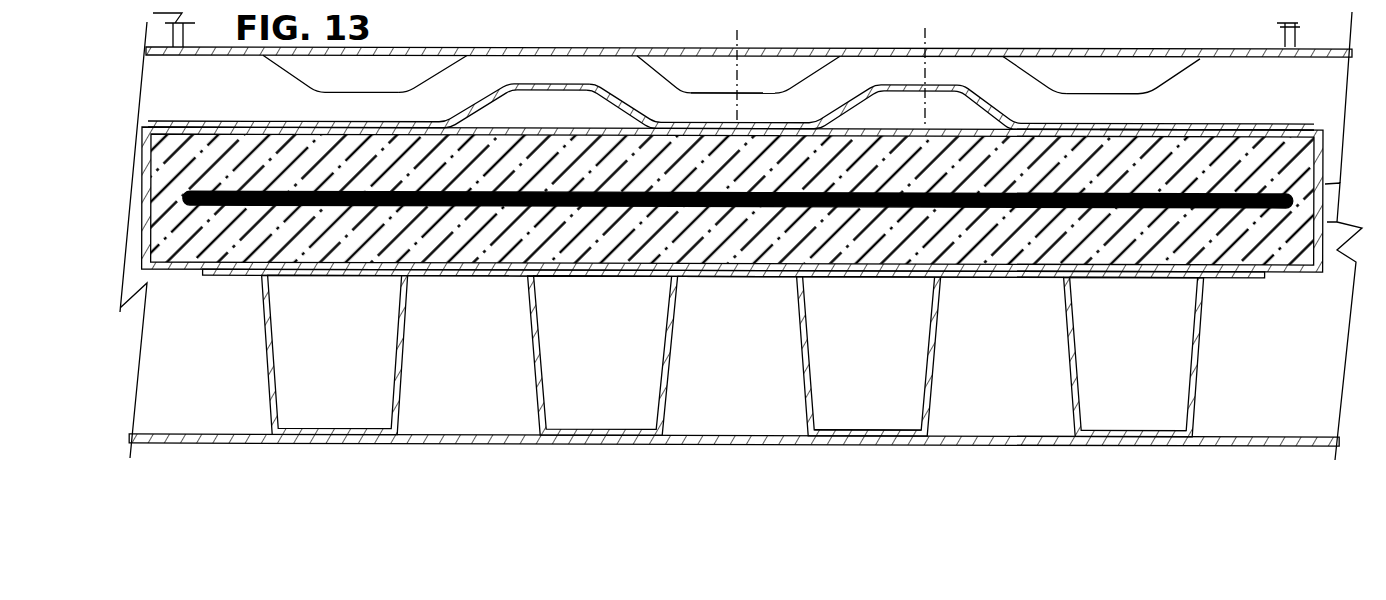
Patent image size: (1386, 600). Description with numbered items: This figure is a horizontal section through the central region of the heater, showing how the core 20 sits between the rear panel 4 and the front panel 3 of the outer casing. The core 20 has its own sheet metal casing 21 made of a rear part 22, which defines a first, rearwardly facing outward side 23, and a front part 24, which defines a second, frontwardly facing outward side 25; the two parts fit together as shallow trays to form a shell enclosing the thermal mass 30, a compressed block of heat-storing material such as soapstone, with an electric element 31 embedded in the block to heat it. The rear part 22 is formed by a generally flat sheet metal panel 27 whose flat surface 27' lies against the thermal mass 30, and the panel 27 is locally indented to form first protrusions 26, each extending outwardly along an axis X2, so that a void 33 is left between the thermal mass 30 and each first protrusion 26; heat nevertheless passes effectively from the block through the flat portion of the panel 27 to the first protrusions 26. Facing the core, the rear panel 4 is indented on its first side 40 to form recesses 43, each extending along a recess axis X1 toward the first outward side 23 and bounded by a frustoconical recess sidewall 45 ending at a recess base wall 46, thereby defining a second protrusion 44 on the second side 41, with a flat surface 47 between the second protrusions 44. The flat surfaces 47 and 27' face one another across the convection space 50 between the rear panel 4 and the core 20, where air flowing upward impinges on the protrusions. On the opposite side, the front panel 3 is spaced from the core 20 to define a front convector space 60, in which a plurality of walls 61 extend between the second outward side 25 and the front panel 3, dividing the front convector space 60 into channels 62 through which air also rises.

The front panel 3 is at (483, 443).
The rear panel 4 is at (444, 50).
The core 20 is at (693, 355).
The casing 21 is at (732, 210).
The rear part 22 is at (1210, 123).
The first outward side 23 is at (263, 96).
The front part 24 is at (583, 272).
The second outward side 25 is at (733, 294).
The first protrusions 26 is at (731, 96).
The sheet metal panel 27 is at (224, 108).
The flat surface 27' is at (372, 113).
The thermal mass 30 is at (1157, 255).
The electric element 31 is at (978, 210).
The void 33 is at (549, 122).
The first side 40 is at (707, 70).
The second side 41 is at (1130, 83).
The recesses 43 is at (692, 72).
The second protrusions 44 is at (785, 85).
The recess sidewall 45 is at (420, 72).
The recess base wall 46 is at (707, 96).
The flat surface 47 is at (876, 60).
The convection space 50 is at (622, 90).
The front convector space 60 is at (455, 352).
The walls 61 is at (665, 373).
The channels 62 is at (747, 390).
The recess axis X1 is at (737, 33).
The axis X2 is at (925, 33).